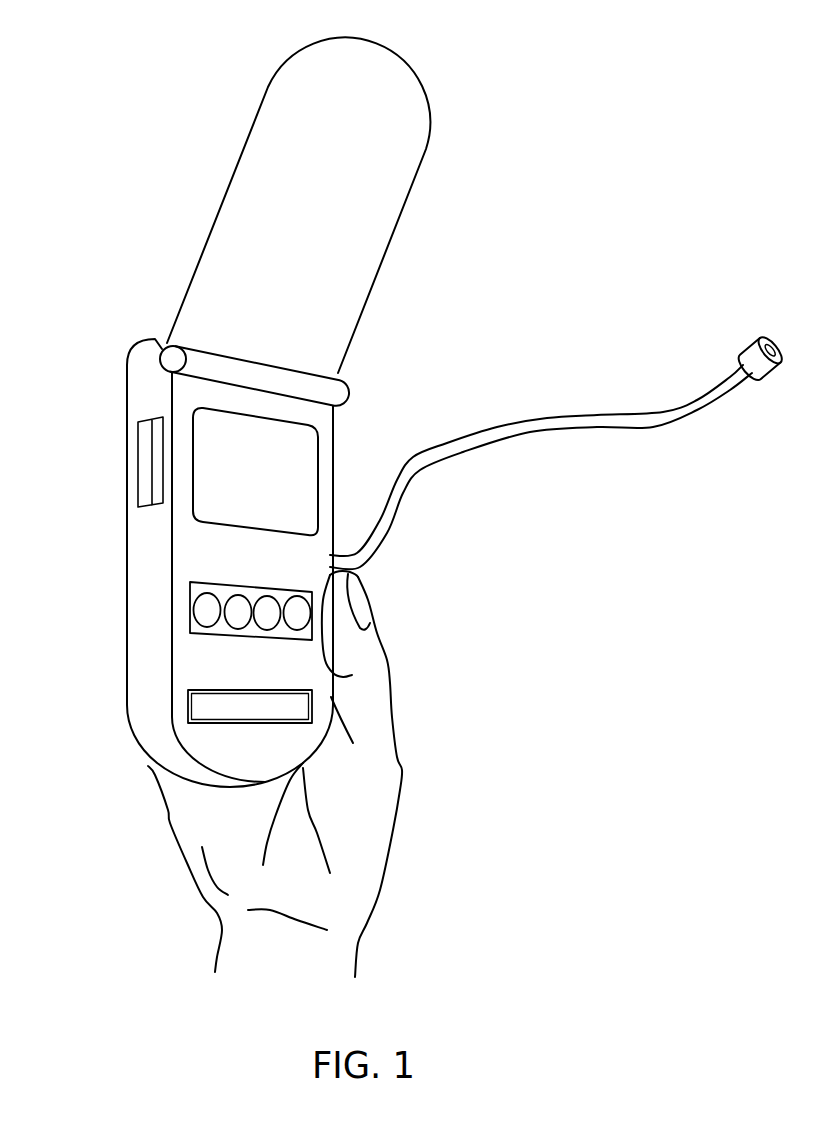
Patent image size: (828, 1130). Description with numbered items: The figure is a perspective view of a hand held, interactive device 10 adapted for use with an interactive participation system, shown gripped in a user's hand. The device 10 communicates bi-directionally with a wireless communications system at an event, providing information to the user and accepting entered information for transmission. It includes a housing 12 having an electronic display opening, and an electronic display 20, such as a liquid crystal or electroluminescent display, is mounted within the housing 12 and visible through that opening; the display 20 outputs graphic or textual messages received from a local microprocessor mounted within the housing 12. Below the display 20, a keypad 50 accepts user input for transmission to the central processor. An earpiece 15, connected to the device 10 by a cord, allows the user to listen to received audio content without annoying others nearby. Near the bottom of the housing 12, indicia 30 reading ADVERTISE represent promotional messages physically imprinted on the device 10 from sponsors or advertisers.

The hand held interactive device 10 is at (236, 412).
The housing 12 is at (133, 627).
The earpiece 15 is at (536, 437).
The electronic display 20 is at (330, 437).
The indicia 30 is at (188, 718).
The keypad 50 is at (190, 610).